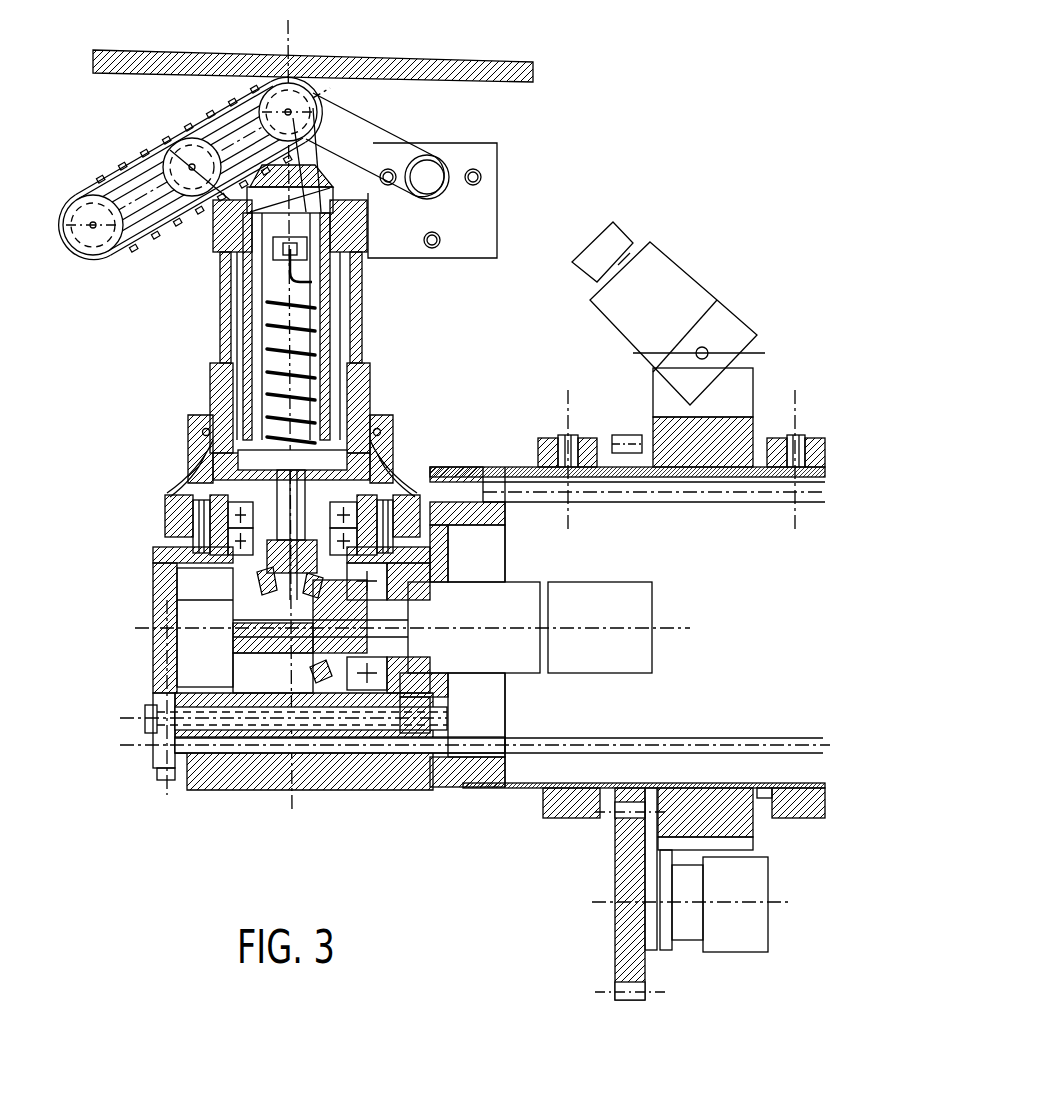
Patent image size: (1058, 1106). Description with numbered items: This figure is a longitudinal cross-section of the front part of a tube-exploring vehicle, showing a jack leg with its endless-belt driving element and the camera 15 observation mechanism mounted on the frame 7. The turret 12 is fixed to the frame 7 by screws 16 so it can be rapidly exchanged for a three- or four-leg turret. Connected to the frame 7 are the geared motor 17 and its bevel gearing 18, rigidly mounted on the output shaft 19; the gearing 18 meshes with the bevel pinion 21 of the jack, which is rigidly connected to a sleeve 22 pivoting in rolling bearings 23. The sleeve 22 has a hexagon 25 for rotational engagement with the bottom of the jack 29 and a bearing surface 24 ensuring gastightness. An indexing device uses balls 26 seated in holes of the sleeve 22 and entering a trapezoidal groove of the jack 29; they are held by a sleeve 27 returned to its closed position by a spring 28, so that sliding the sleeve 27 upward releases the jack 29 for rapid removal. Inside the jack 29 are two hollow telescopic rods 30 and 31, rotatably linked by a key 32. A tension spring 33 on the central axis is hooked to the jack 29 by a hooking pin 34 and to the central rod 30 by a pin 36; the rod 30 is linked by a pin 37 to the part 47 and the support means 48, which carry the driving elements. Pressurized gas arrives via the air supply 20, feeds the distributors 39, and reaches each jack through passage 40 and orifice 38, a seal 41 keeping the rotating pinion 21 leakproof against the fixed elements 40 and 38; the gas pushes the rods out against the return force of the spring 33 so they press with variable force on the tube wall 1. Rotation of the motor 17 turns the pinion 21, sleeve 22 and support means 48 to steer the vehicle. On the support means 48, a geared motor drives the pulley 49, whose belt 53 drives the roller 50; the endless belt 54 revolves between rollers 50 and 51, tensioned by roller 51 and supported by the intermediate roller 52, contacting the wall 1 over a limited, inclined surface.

The tube wall 1 is at (320, 62).
The frame 7 is at (497, 795).
The turret 12 is at (240, 795).
The camera 15 is at (675, 265).
The screws 16 is at (145, 718).
The geared motor 17 is at (592, 590).
The bevel gearing 18 is at (310, 655).
The output shaft 19 is at (415, 630).
The air supply 20 is at (570, 738).
The bevel pinion 21 is at (265, 590).
The sleeve 22 is at (235, 590).
The rolling bearings 23 is at (170, 505).
The bearing surface 24 is at (378, 435).
The hexagon 25 is at (210, 460).
The balls 26 is at (205, 432).
The sleeve 27 is at (195, 400).
The spring 28 is at (170, 530).
The jack 29 is at (205, 450).
The central rod 30 is at (328, 328).
The hollow rod 31 is at (345, 300).
The key 32 is at (215, 385).
The tension spring 33 is at (245, 330).
The hooking pin 34 is at (378, 455).
The pin 36 is at (285, 252).
The pin 37 is at (310, 185).
The orifice 38 is at (200, 622).
The distributors 39 is at (195, 655).
The gas passage 40 is at (255, 655).
The seal 41 is at (160, 570).
The part 47 is at (322, 118).
The support means 48 is at (483, 262).
The pulley 49 is at (430, 155).
The roller 50 is at (278, 86).
The roller 51 is at (88, 258).
The intermediate roller 52 is at (175, 150).
The belt 53 is at (365, 120).
The endless belt 54 is at (145, 240).